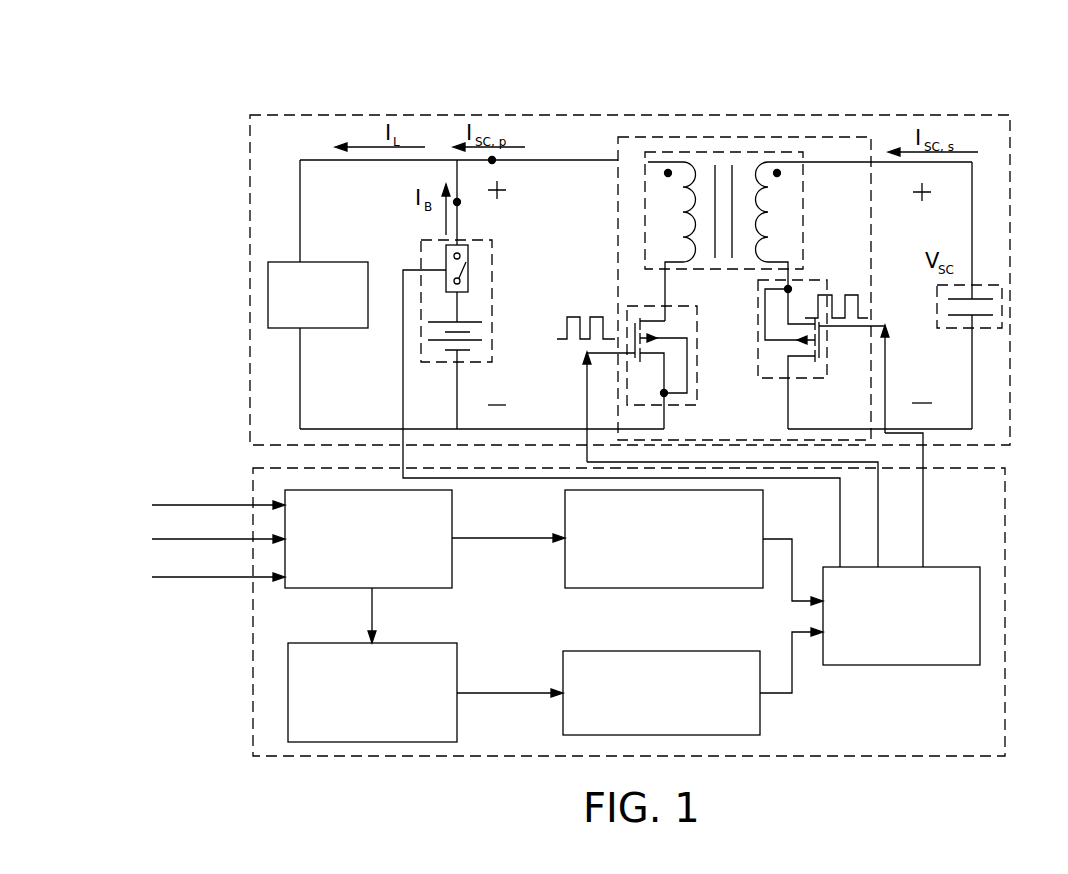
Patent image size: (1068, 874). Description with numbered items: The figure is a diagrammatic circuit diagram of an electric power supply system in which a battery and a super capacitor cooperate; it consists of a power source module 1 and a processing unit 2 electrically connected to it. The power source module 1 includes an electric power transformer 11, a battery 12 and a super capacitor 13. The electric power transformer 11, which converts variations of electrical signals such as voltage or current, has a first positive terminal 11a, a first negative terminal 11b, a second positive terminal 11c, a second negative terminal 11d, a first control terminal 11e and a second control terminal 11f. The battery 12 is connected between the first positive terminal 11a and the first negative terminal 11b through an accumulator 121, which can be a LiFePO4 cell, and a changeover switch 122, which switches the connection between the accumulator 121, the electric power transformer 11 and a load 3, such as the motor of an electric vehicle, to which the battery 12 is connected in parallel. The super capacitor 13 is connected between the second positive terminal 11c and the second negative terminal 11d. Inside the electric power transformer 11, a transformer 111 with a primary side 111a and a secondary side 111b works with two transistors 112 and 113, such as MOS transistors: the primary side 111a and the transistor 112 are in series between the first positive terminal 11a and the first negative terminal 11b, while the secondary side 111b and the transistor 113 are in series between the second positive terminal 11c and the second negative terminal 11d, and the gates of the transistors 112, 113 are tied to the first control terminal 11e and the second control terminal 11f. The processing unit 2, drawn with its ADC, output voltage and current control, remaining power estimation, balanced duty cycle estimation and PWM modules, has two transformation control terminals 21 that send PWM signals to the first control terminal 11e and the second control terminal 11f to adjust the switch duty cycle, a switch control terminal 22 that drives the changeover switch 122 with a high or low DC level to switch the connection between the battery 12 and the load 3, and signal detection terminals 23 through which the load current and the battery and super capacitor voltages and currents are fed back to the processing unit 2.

The power source module 1 is at (291, 113).
The processing unit 2 is at (1010, 522).
The load 3 is at (332, 262).
The electric power transformer 11 is at (618, 215).
The first positive terminal 11a is at (618, 161).
The first negative terminal 11b is at (618, 432).
The second positive terminal 11c is at (871, 162).
The second negative terminal 11d is at (872, 440).
The first control terminal 11e is at (620, 353).
The second control terminal 11f is at (874, 327).
The battery 12 is at (485, 294).
The super capacitor 13 is at (972, 285).
The transformation control terminals 21 is at (882, 468).
The switch control terminal 22 is at (403, 468).
The signal detection terminals 23 is at (253, 505).
The transformer 111 is at (758, 187).
The primary side 111a is at (703, 162).
The secondary side 111b is at (748, 163).
The transistor 112 is at (698, 357).
The transistor 113 is at (785, 378).
The accumulator 121 is at (460, 352).
The changeover switch 122 is at (469, 258).